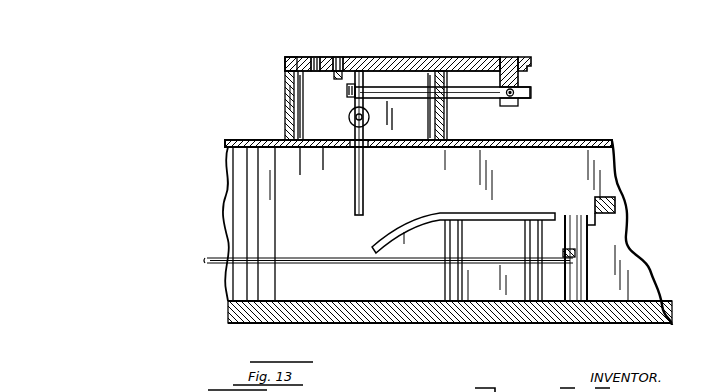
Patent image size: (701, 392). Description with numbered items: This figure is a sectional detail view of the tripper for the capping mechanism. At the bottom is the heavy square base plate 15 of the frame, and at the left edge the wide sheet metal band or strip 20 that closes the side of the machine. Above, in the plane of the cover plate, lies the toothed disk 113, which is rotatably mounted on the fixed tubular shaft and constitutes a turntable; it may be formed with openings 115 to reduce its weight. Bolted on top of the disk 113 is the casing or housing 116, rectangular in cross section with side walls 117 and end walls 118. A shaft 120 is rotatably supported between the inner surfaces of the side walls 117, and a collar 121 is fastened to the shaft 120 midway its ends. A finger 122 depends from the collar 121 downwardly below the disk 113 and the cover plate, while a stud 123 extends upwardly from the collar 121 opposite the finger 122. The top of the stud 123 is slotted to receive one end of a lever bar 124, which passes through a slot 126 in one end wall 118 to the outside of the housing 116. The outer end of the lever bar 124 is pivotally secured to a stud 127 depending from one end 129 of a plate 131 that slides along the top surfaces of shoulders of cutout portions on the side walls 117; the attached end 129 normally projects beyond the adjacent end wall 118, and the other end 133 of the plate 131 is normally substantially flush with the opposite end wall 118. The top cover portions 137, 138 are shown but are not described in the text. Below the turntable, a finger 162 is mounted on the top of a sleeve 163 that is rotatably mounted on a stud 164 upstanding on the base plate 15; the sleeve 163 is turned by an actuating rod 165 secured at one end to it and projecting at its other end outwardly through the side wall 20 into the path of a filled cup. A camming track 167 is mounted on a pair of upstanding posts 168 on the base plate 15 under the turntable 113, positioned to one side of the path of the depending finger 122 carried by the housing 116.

The base plate 15 is at (640, 302).
The band or strip 20 is at (238, 218).
The toothed disk 113 is at (552, 139).
The openings 115 is at (347, 148).
The casing or housing 116 is at (281, 126).
The side walls 117 is at (422, 127).
The end walls 118 is at (284, 106).
The shaft 120 is at (349, 118).
The collar 121 is at (382, 111).
The finger 122 is at (364, 191).
The stud 123 is at (353, 100).
The lever bar 124 is at (402, 85).
The slot 126 is at (449, 80).
The stud 127 is at (522, 88).
The attached end of plate 129 is at (438, 57).
The plate 131 is at (532, 66).
The other end of plate 133 is at (284, 66).
The insert 137 is at (336, 60).
The insert 138 is at (312, 56).
The finger 162 is at (617, 206).
The sleeve 163 is at (586, 272).
The stud 164 is at (573, 288).
The actuating rod 165 is at (289, 256).
The camming track 167 is at (472, 213).
The posts 168 is at (445, 250).